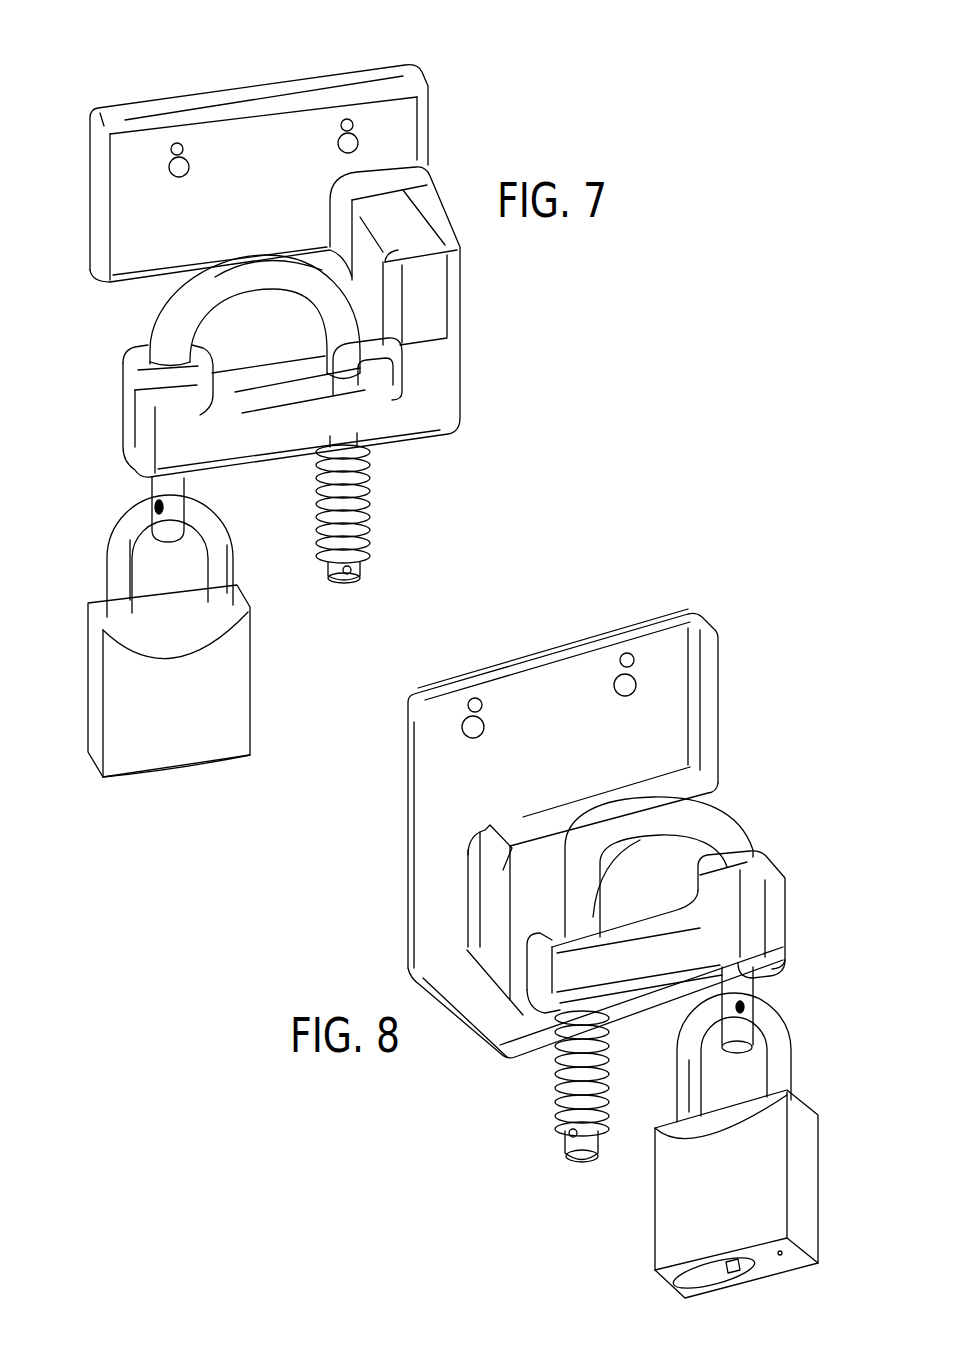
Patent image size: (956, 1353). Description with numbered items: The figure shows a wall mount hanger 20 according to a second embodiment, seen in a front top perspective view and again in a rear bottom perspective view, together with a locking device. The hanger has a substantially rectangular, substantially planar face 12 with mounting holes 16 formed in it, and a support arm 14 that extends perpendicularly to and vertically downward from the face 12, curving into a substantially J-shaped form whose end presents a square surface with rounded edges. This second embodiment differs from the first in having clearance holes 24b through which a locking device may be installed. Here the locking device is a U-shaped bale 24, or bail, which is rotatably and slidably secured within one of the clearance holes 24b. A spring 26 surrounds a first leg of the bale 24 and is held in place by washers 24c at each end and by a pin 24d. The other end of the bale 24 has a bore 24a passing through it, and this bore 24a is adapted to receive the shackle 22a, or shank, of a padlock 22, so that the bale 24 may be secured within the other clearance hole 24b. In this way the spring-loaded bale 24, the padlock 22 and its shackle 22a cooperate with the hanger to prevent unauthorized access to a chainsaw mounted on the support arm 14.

In FIG. 7, the face 12 is at (247, 140).
In FIG. 8, the face 12 is at (560, 677).
In FIG. 7, the support arm 14 is at (257, 438).
In FIG. 8, the support arm 14 is at (720, 917).
In FIG. 7, the mounting holes 16 is at (170, 173).
In FIG. 8, the mounting holes 16 is at (613, 683).
In FIG. 7, the wall mount hanger 20 is at (487, 52).
In FIG. 8, the wall mount hanger 20 is at (744, 624).
In FIG. 7, the padlock 22 is at (217, 683).
In FIG. 8, the padlock 22 is at (668, 1227).
In FIG. 7, the shackle 22a is at (120, 537).
In FIG. 8, the shackle 22a is at (780, 1063).
In FIG. 7, the U-shaped bale 24 is at (173, 333).
In FIG. 8, the U-shaped bale 24 is at (722, 828).
In FIG. 7, the bore 24a is at (157, 508).
In FIG. 8, the bore 24a is at (743, 1008).
In FIG. 7, the clearance holes 24b is at (150, 352).
In FIG. 8, the clearance holes 24b is at (767, 958).
In FIG. 7, the washers 24c is at (367, 560).
In FIG. 8, the washers 24c is at (557, 1010).
In FIG. 7, the pin 24d is at (348, 574).
In FIG. 8, the pin 24d is at (563, 1132).
In FIG. 7, the spring 26 is at (370, 514).
In FIG. 8, the spring 26 is at (555, 1088).